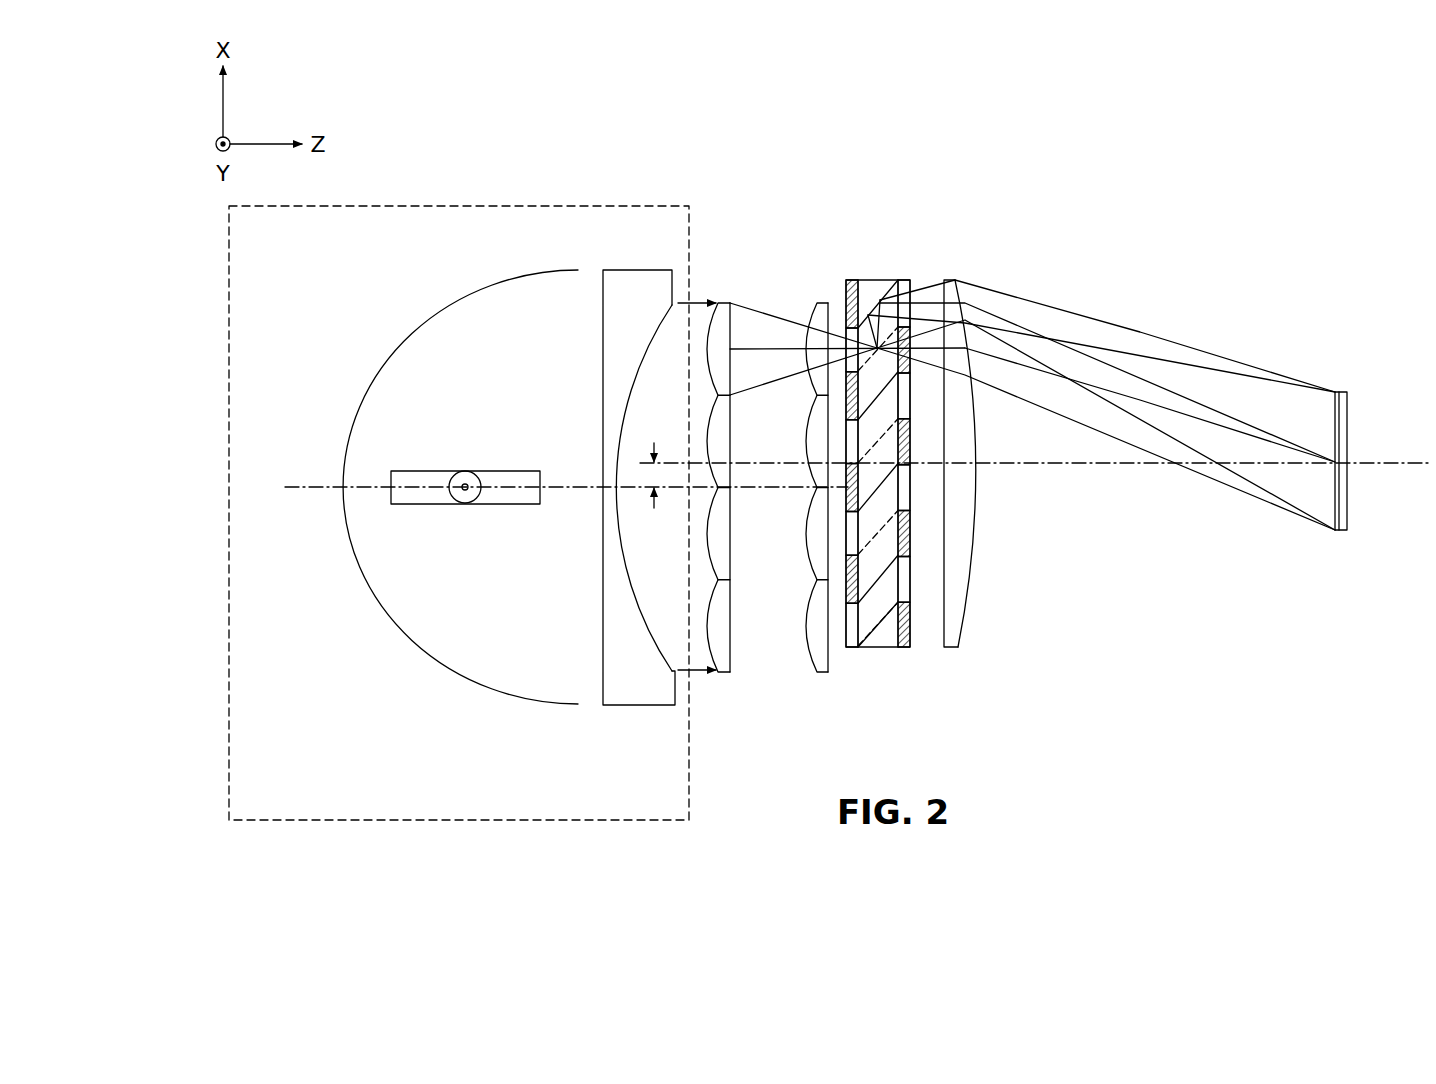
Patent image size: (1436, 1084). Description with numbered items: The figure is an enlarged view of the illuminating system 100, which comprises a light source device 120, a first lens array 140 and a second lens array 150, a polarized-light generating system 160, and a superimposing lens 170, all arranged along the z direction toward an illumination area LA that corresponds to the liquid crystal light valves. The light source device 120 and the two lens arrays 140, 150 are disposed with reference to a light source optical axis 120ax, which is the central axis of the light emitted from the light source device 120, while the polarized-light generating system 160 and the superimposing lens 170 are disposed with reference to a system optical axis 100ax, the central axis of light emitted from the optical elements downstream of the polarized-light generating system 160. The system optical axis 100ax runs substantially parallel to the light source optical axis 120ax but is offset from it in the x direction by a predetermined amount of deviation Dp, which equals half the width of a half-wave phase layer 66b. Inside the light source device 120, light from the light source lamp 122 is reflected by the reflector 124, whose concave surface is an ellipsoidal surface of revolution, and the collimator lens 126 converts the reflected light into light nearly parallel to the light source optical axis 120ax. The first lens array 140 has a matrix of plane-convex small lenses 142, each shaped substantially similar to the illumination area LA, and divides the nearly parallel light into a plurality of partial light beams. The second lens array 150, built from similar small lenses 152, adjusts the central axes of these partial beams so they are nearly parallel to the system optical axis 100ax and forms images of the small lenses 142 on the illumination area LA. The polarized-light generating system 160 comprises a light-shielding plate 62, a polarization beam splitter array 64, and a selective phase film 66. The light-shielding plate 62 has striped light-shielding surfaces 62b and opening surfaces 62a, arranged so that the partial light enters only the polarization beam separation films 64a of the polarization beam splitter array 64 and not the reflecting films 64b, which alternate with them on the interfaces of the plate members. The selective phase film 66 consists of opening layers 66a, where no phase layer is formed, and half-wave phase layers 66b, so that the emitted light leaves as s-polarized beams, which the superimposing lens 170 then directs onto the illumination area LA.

The illuminating system 100 is at (421, 130).
The light source device 120 is at (535, 205).
The light source lamp 122 is at (425, 505).
The reflector 124 is at (402, 341).
The collimator lens 126 is at (633, 707).
The light source optical axis 120ax is at (293, 491).
The system optical axis 100ax is at (1383, 466).
The amount of deviation Dp is at (650, 476).
The first lens array 140 is at (719, 299).
The small lenses 142 is at (727, 662).
The second lens array 150 is at (818, 299).
The small lenses 152 is at (806, 645).
The polarized-light generating system 160 is at (875, 276).
The light-shielding plate 62 is at (850, 648).
The opening surfaces 62a is at (848, 610).
The light-shielding surfaces 62b is at (848, 578).
The polarization beam splitter array 64 is at (872, 648).
The polarization beam separation films 64a is at (912, 540).
The reflecting films 64b is at (912, 487).
The selective phase film 66 is at (905, 648).
The opening layers 66a is at (906, 582).
The λ/2 phase layers 66b is at (910, 627).
The superimposing lens 170 is at (952, 280).
The illumination area LA is at (1340, 392).